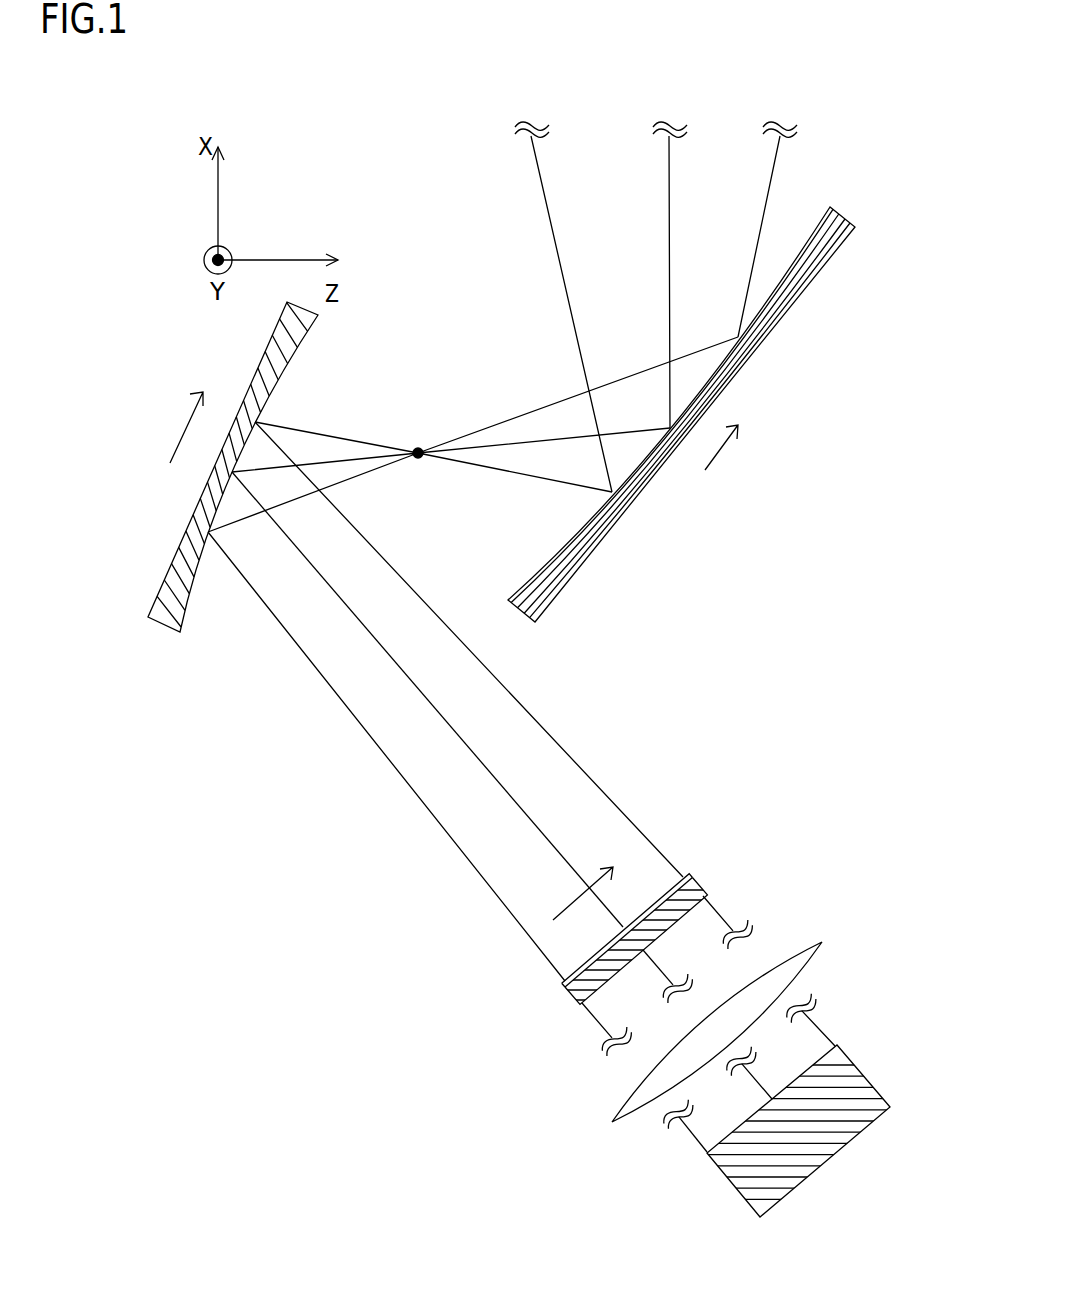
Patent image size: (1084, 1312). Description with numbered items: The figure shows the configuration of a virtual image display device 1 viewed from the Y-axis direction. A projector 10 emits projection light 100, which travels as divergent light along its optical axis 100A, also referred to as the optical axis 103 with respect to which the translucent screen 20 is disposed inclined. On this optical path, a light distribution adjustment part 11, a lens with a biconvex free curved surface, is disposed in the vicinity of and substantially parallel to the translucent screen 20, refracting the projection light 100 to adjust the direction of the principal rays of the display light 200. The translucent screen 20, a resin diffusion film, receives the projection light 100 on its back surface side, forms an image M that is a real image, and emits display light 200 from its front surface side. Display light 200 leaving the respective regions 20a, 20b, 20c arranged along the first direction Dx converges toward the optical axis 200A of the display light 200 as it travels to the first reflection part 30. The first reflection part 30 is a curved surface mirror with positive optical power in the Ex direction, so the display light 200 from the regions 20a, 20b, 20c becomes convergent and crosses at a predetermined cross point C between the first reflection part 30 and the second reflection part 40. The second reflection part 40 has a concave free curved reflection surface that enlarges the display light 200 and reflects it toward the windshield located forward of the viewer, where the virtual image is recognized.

The virtual image display device 1 is at (899, 204).
The projector 10 is at (863, 1077).
The light distribution adjustment part 11 is at (645, 1093).
The translucent screen 20 is at (600, 876).
The region of translucent screen 20a is at (688, 870).
The region of translucent screen 20b is at (618, 928).
The region of translucent screen 20c is at (560, 981).
The first reflection part 30 is at (186, 620).
The second reflection part 40 is at (805, 307).
The projection light 100 is at (653, 1006).
The optical axis of projection light 100A is at (665, 975).
The optical axis of projection light 103 is at (706, 1150).
The display light 200 is at (463, 701).
The optical axis of display light 200A is at (497, 778).
The image M is at (656, 900).
The cross point C is at (419, 452).